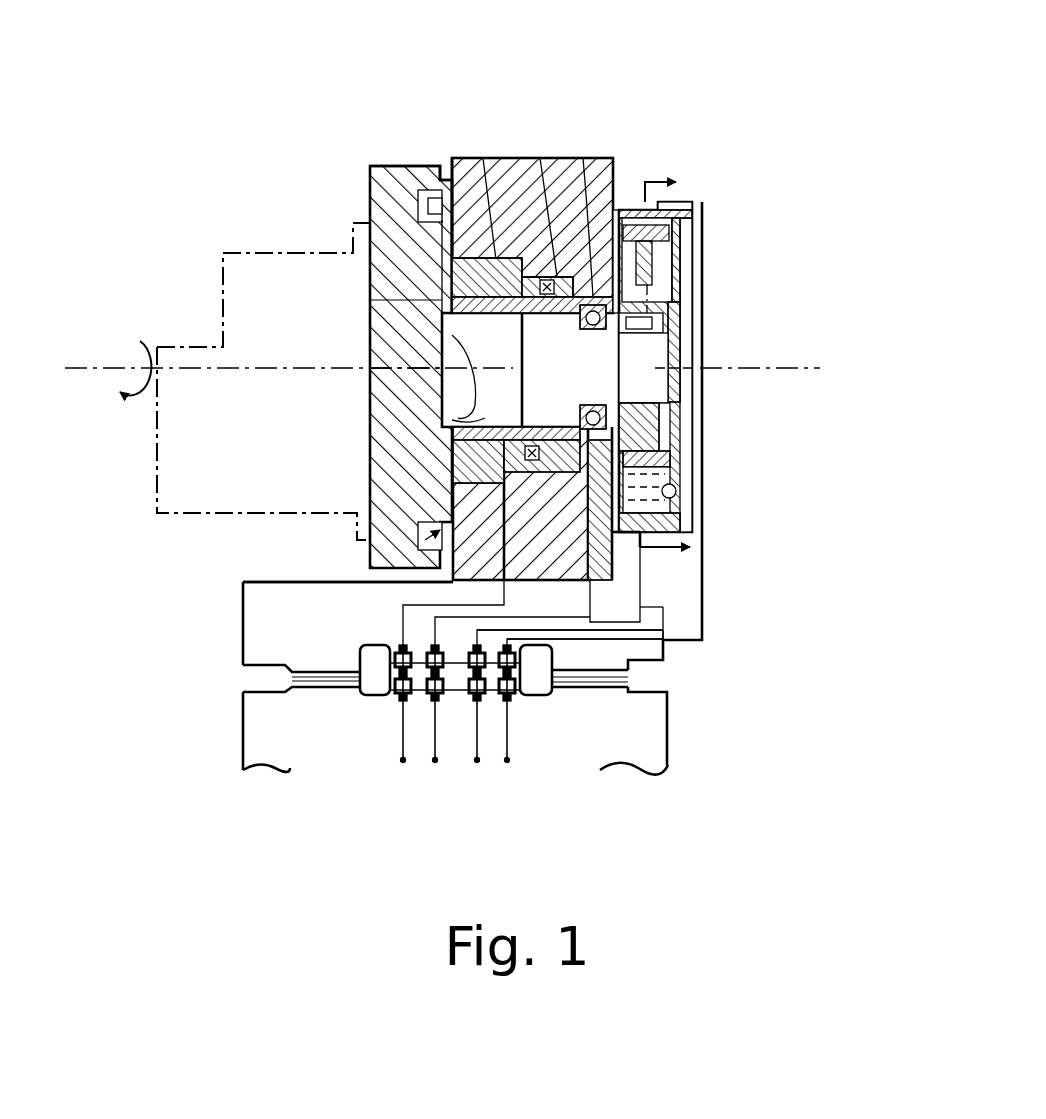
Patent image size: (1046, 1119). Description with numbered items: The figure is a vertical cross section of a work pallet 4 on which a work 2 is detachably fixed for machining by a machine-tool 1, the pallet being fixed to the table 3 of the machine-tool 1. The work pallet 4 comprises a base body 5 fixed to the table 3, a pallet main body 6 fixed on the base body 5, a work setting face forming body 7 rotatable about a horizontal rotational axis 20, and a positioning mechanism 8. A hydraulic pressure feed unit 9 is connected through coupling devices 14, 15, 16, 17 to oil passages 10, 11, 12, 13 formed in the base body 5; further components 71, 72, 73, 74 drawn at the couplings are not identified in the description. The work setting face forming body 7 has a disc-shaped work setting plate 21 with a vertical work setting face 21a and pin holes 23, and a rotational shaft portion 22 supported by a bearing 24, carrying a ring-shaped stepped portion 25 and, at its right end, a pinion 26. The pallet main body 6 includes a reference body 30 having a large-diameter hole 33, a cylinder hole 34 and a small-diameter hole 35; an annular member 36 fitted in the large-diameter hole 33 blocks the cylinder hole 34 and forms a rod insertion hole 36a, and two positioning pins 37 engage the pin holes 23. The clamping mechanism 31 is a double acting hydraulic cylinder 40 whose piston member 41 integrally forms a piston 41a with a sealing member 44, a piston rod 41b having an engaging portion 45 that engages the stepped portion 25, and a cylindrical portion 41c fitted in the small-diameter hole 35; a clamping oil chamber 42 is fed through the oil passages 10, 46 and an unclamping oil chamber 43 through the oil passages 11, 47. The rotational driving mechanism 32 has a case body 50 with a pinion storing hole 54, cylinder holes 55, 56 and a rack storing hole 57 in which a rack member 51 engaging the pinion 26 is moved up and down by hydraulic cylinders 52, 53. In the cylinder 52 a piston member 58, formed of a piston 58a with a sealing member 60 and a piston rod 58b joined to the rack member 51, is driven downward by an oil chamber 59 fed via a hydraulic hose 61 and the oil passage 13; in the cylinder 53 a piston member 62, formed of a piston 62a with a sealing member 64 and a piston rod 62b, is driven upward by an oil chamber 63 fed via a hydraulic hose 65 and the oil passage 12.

The machine-tool 1 is at (694, 826).
The work 2 is at (222, 252).
The table 3 is at (668, 766).
The work pallet 4 is at (714, 83).
The base body 5 is at (682, 662).
The pallet main body 6 is at (455, 158).
The work setting face forming body 7 is at (368, 170).
The positioning mechanism 8 is at (370, 550).
The hydraulic pressure feed unit 9 is at (348, 754).
The oil passage 10 is at (400, 627).
The oil passage 11 is at (568, 622).
The oil passage 12 is at (605, 622).
The oil passage 13 is at (640, 650).
The coupling device 14 is at (395, 702).
The coupling device 15 is at (440, 708).
The coupling device 16 is at (482, 708).
The coupling device 17 is at (515, 702).
The rotational axis 20 is at (92, 356).
The work setting plate 21 is at (370, 200).
The work setting face 21a is at (370, 380).
The rotational shaft portion 22 is at (518, 404).
The pin holes 23 is at (428, 190).
The bearing 24 is at (590, 404).
The stepped portion 25 is at (572, 313).
The pinion 26 is at (690, 334).
The reference body 30 is at (448, 178).
The clamping mechanism 31 is at (453, 476).
The rotational driving mechanism 32 is at (692, 205).
The large-diameter hole 33 is at (450, 274).
The cylinder hole 34 is at (480, 365).
The small-diameter hole 35 is at (657, 369).
The annular member 36 is at (370, 300).
The rod insertion hole 36a is at (452, 335).
The positioning pins 37 is at (395, 584).
The double acting hydraulic cylinder 40 is at (520, 503).
The piston member 41 is at (636, 92).
The piston 41a is at (541, 158).
The piston rod 41b is at (481, 158).
The cylindrical part 41c is at (590, 158).
The clamping oil chamber 42 is at (540, 462).
The unclamping oil chamber 43 is at (585, 462).
The sealing member 44 is at (552, 427).
The engaging portion 45 is at (470, 425).
The oil passage 46 is at (478, 531).
The oil passage 47 is at (615, 525).
The case body 50 is at (702, 562).
The rack member 51 is at (695, 312).
The hydraulic cylinder 52 is at (700, 246).
The hydraulic cylinder 53 is at (700, 514).
The pinion storing hole 54 is at (690, 352).
The cylinder hole 55 is at (619, 210).
The cylinder hole 56 is at (690, 530).
The rack storing hole 57 is at (690, 402).
The piston member 58 is at (806, 248).
The piston 58a is at (680, 256).
The piston rod 58b is at (680, 282).
The oil chamber 59 is at (672, 205).
The sealing member 60 is at (692, 224).
The hydraulic hose 61 is at (700, 374).
The piston member 62 is at (806, 422).
The piston 62a is at (690, 456).
The piston rod 62b is at (690, 426).
The oil chamber 63 is at (702, 602).
The sealing member 64 is at (690, 486).
The hydraulic hose 65 is at (666, 608).
The valve 71 is at (400, 708).
The valve 72 is at (420, 710).
The valve 73 is at (470, 708).
The valve 74 is at (510, 708).